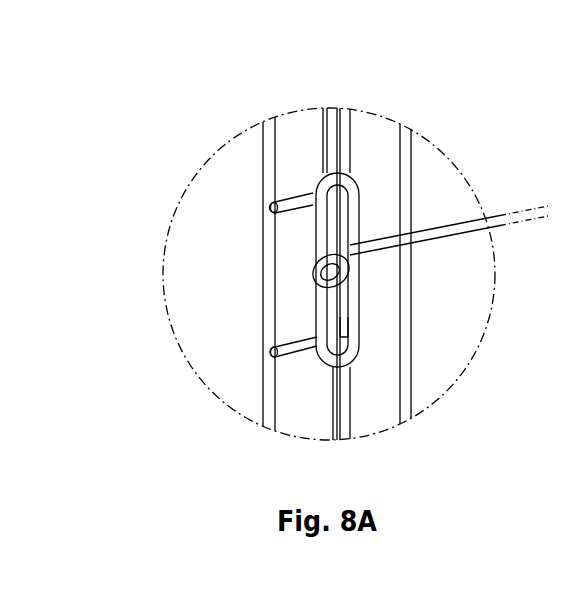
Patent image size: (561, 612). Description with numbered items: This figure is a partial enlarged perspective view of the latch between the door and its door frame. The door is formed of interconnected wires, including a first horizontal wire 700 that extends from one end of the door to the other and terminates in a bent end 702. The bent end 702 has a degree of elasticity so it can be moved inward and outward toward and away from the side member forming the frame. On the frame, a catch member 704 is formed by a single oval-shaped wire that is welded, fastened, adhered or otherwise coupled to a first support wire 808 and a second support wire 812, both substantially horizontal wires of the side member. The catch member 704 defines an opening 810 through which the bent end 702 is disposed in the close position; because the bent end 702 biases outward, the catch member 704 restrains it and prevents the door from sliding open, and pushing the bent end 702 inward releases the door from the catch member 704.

The first horizontal wire 700 is at (435, 225).
The bent end 702 is at (313, 268).
The catch member 704 is at (325, 173).
The first support wire 808 is at (288, 198).
The opening 810 is at (322, 321).
The second support wire 812 is at (292, 352).